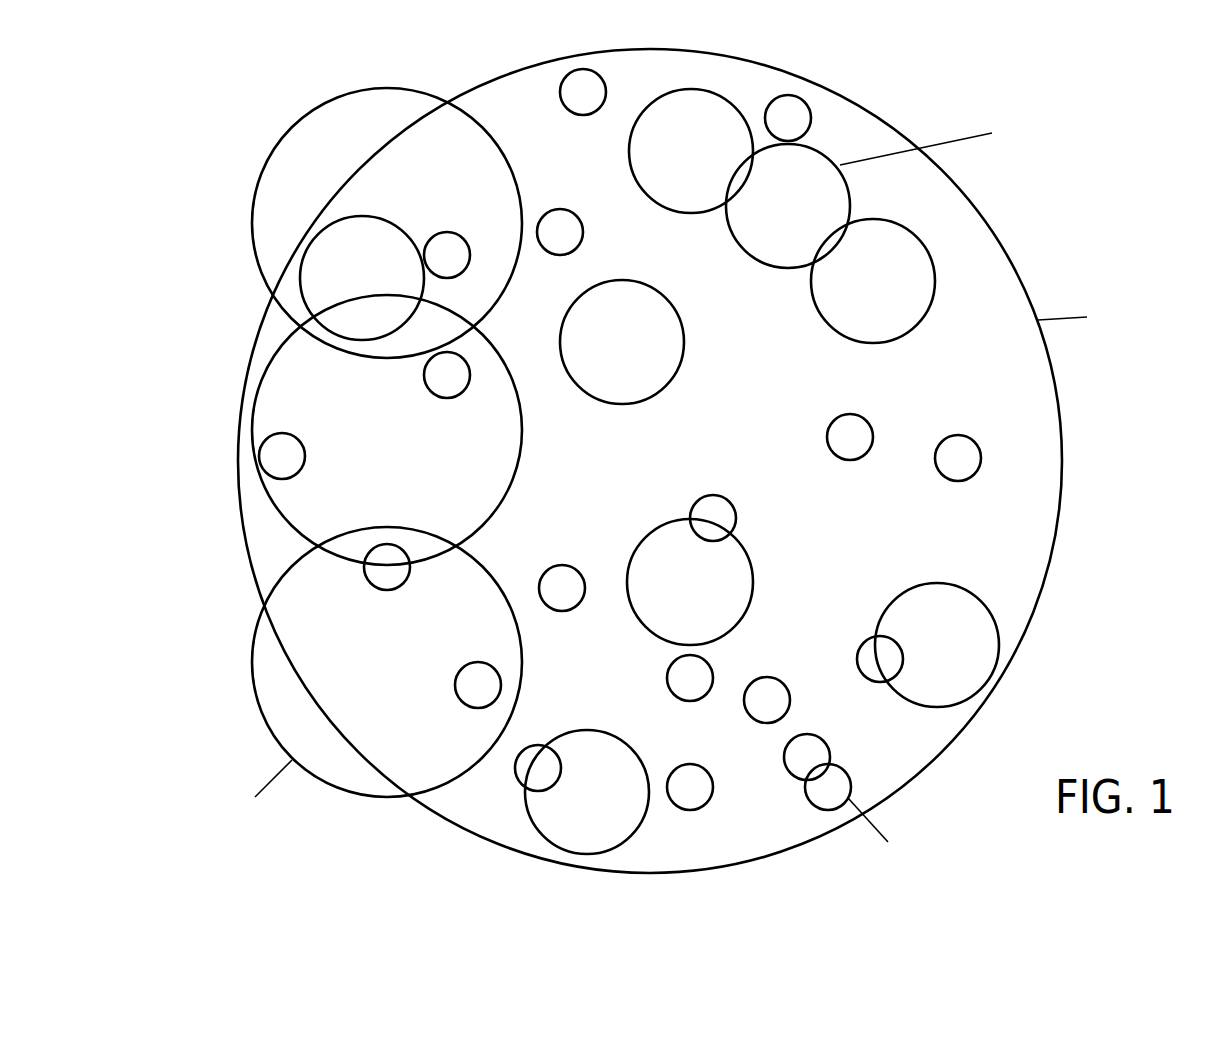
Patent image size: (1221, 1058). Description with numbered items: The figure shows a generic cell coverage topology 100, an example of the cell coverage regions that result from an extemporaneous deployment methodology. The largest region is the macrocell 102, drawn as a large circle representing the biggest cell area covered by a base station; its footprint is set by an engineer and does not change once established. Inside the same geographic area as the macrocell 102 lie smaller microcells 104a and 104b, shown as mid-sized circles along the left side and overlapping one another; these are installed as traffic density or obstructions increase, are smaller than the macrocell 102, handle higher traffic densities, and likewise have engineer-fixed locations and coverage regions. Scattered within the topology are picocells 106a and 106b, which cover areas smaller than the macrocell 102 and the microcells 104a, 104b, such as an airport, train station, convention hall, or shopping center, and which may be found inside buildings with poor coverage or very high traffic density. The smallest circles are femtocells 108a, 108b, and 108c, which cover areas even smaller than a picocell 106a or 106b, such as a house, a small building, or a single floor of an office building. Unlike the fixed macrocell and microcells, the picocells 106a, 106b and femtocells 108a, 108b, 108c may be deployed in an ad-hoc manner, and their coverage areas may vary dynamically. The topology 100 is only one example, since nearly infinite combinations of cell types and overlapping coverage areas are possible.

The generic cell coverage topology 100 is at (230, 131).
The macrocell 102 is at (1062, 427).
The microcell 104a is at (523, 433).
The microcell 104b is at (522, 663).
The picocell 106a is at (752, 560).
The picocell 106b is at (913, 583).
The femtocell 108a is at (837, 420).
The femtocell 108b is at (957, 438).
The femtocell 108c is at (865, 647).